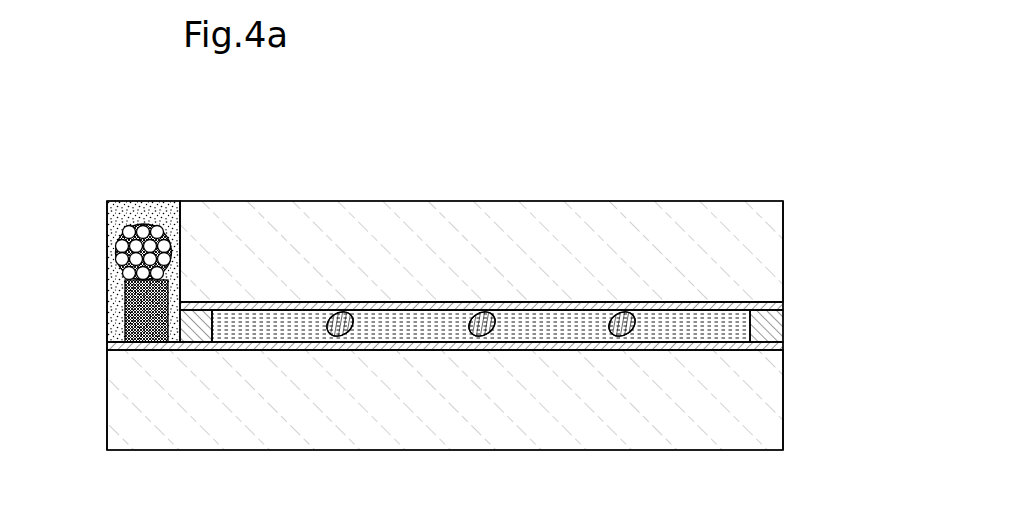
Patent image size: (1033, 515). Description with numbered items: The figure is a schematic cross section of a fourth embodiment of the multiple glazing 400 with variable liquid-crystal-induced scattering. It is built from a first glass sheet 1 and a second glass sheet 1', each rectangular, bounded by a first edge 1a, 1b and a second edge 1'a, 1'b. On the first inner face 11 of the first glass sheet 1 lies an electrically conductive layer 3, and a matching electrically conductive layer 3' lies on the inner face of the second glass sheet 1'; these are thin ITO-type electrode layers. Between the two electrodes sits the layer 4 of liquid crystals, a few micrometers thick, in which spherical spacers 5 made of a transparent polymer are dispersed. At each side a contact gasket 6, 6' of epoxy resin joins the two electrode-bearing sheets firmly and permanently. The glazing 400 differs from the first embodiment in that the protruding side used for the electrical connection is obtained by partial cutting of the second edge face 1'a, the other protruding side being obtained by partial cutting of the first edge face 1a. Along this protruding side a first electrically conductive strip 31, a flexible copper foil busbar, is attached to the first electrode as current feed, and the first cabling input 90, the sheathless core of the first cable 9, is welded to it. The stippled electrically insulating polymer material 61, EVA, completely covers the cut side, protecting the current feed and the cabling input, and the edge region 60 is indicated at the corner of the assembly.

The multiple glazing 400 is at (630, 165).
The first glass sheet 1 is at (445, 400).
The second glass sheet 1' is at (481, 251).
The first edge face 1a is at (107, 418).
The first edge 1b is at (783, 426).
The second edge face 1'a is at (169, 219).
The second edge 1'b is at (818, 251).
The electrically conductive layer 3 is at (445, 382).
The electrically conductive layer 3' is at (481, 270).
The layer of liquid crystals 4 is at (548, 320).
The spherical spacers 5 is at (340, 312).
The contact gasket 6 is at (201, 364).
The contact gasket 6' is at (798, 319).
The first cable 9 is at (108, 247).
The first cabling input 90 is at (124, 280).
The first electrically conductive strip 31 is at (114, 320).
The edge sealing 60 is at (100, 356).
The electrically insulating polymer material 61 is at (130, 218).
The first inner face 11 is at (179, 355).